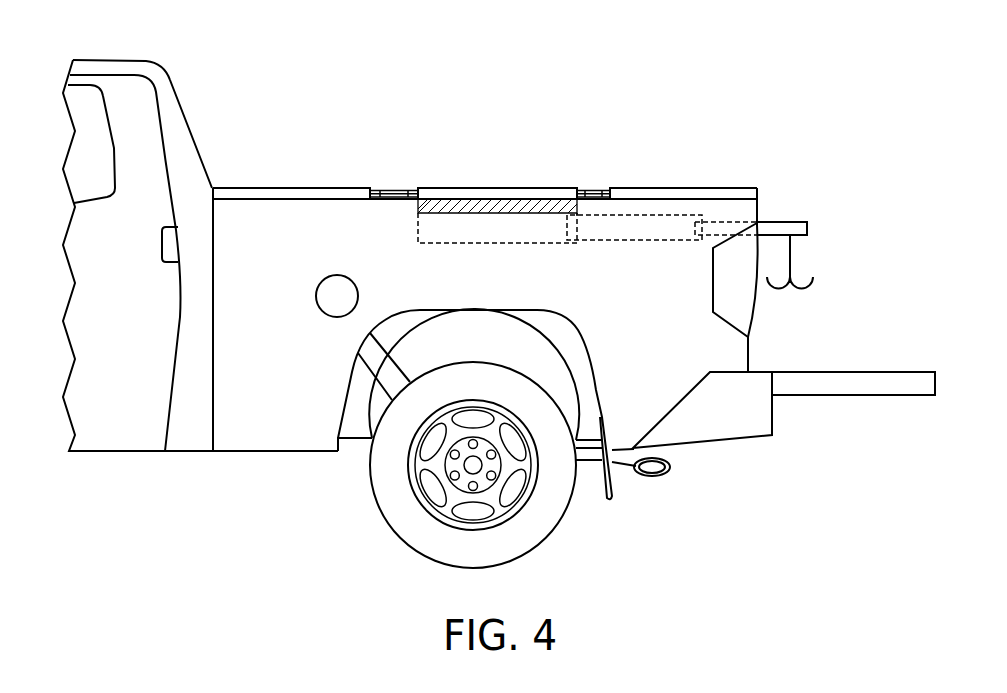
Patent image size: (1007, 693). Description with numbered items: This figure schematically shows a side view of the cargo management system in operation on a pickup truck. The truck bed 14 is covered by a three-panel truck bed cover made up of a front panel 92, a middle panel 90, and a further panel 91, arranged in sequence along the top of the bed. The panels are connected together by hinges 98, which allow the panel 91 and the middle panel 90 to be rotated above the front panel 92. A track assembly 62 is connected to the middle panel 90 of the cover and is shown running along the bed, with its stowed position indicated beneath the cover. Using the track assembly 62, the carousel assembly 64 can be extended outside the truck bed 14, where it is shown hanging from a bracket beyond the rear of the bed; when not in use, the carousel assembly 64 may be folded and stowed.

The truck bed 14 is at (258, 200).
The front panel 92 is at (300, 188).
The hinges 98 is at (395, 190).
The middle panel 90 is at (507, 188).
The panel 91 is at (717, 188).
The track assembly 62 is at (654, 200).
The carousel assembly 64 is at (830, 262).